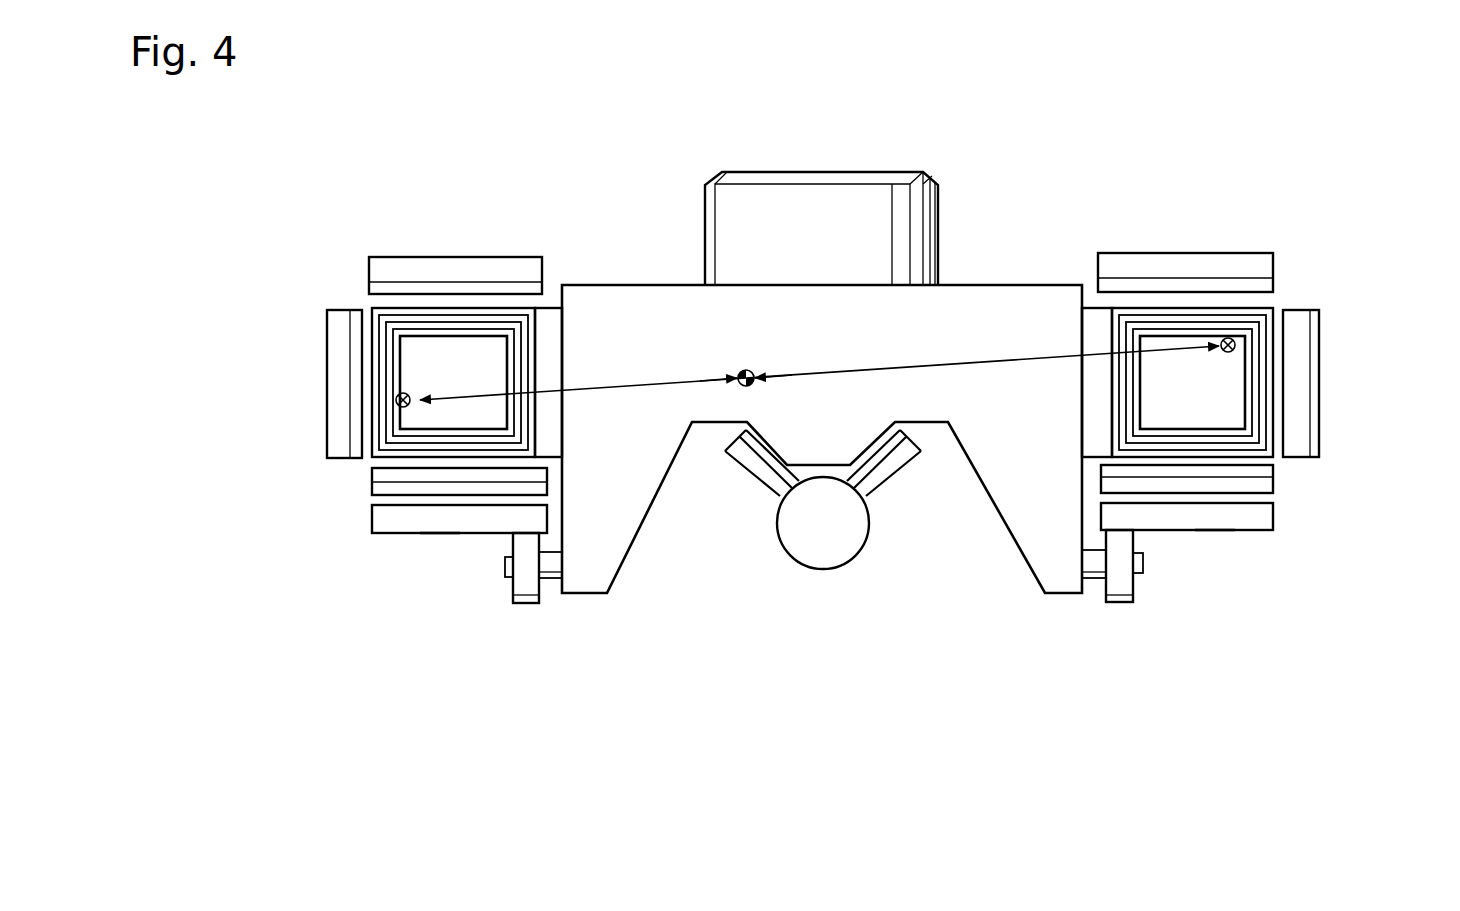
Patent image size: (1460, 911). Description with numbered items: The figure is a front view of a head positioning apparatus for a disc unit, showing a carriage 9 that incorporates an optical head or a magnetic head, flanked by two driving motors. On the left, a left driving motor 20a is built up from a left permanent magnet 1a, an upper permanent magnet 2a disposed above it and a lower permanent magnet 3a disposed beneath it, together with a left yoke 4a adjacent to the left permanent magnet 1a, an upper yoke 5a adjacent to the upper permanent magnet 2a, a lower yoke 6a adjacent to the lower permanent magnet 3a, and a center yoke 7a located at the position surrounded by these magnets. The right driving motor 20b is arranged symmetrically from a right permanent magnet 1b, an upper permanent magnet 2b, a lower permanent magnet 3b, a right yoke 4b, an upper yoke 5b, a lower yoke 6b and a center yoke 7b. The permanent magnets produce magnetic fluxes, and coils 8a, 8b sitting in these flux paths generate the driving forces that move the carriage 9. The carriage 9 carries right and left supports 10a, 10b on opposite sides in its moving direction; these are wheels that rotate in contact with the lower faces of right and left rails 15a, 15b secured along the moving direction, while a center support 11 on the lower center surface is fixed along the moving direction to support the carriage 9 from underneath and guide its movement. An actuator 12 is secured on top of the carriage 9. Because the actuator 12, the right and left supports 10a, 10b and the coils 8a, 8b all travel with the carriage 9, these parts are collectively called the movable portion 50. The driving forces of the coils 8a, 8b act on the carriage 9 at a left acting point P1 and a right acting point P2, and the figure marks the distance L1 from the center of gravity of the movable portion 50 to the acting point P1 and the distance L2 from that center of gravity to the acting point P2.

The left permanent magnet 1a is at (361, 309).
The right permanent magnet 1b is at (1285, 309).
The upper permanent magnet 2a is at (548, 300).
The upper permanent magnet 2b is at (1275, 292).
The lower permanent magnet 3a is at (372, 473).
The lower permanent magnet 3b is at (1275, 468).
The left yoke 4a is at (327, 359).
The right yoke 4b is at (1321, 367).
The upper yoke 5a is at (451, 257).
The upper yoke 5b is at (1185, 253).
The lower yoke 6a is at (372, 520).
The lower yoke 6b is at (1275, 518).
The center yoke 7a is at (410, 413).
The center yoke 7b is at (1232, 417).
The coil 8a is at (371, 308).
The coil 8b is at (1275, 306).
The carriage 9 is at (1025, 285).
The left support 10a is at (525, 603).
The right support 10b is at (1120, 603).
The center support 11 is at (823, 570).
The actuator 12 is at (880, 176).
The left rail 15a is at (437, 531).
The right rail 15b is at (1215, 529).
The left driving motor 20a is at (305, 336).
The right driving motor 20b is at (1330, 333).
The movable portion 50 is at (694, 184).
The left acting point P1 is at (396, 401).
The right acting point P2 is at (1234, 342).
The distance L1 is at (583, 379).
The distance L2 is at (982, 353).